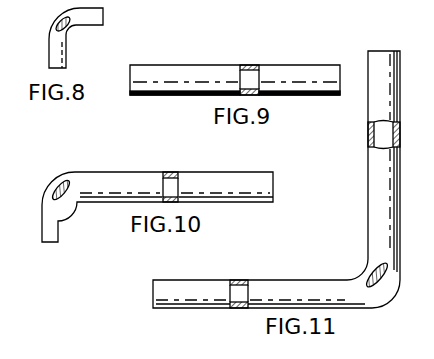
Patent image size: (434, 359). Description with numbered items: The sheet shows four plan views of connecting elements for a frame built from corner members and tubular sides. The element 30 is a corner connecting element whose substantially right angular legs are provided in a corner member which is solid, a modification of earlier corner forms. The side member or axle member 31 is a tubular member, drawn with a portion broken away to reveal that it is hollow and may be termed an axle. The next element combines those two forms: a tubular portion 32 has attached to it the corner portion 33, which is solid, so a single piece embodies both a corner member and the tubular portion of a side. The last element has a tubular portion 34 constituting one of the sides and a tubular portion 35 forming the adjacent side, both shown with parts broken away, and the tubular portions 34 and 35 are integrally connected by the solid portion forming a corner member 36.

In FIG. 8, the corner connecting element 30 is at (70, 31).
In FIG. 9, the side member or axle member 31 is at (237, 70).
In FIG. 10, the tubular portion 32 is at (203, 183).
In FIG. 10, the corner portion 33 is at (56, 184).
In FIG. 11, the tubular portion 34 is at (368, 134).
In FIG. 11, the tubular portion 35 is at (237, 280).
In FIG. 11, the corner member 36 is at (370, 270).